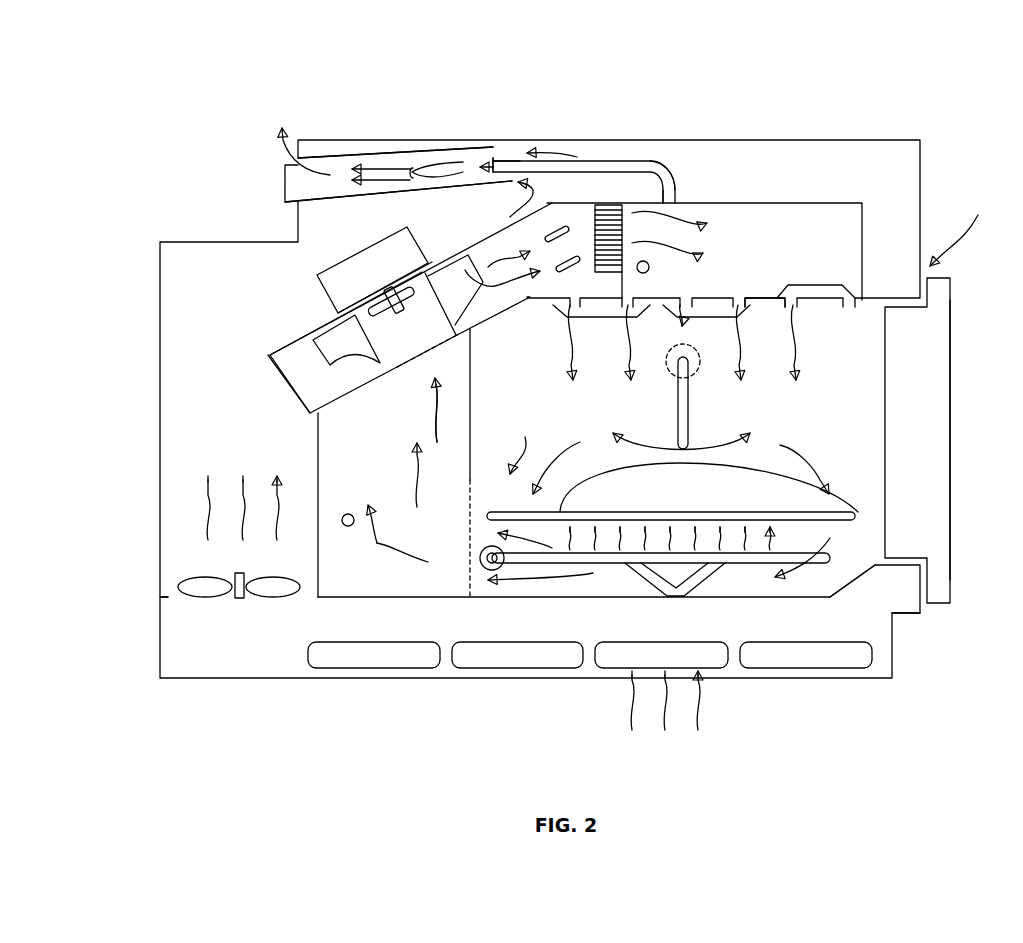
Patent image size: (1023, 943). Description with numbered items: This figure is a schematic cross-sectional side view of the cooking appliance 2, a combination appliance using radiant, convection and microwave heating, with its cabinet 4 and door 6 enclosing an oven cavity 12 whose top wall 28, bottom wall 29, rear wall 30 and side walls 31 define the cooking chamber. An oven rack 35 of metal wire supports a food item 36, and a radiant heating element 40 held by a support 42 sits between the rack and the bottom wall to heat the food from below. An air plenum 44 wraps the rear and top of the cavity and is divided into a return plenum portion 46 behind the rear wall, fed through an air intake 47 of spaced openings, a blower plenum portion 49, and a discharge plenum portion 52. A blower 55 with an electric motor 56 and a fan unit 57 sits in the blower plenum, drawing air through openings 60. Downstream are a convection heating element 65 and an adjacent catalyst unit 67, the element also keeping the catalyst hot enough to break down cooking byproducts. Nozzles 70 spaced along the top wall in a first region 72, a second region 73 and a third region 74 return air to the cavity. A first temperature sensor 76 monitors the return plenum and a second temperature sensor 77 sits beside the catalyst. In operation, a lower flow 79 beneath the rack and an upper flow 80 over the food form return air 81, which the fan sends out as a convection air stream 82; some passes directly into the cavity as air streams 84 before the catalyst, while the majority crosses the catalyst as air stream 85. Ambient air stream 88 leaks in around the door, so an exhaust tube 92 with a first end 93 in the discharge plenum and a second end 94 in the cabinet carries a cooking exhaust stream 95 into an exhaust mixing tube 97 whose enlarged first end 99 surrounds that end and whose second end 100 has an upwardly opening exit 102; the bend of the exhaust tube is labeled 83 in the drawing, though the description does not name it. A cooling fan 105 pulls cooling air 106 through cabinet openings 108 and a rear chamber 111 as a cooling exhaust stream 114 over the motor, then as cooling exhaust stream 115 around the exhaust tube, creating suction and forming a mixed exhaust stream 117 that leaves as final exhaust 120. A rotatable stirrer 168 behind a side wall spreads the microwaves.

The cooking appliance 2 is at (956, 118).
The cabinet 4 is at (922, 197).
The door 6 is at (950, 418).
The oven cavity 12 is at (952, 350).
The top wall 28 is at (773, 320).
The bottom wall 29 is at (778, 593).
The rear wall 30 is at (472, 380).
The side walls 31 is at (814, 431).
The oven rack 35 is at (857, 516).
The food item 36 is at (669, 501).
The radiant heating element 40 is at (832, 560).
The support 42 is at (700, 578).
The air plenum 44 is at (262, 353).
The return plenum portion 46 is at (378, 547).
The air intake 47 is at (467, 537).
The blower plenum portion 49 is at (302, 383).
The discharge plenum portion 52 is at (750, 222).
The blower 55 is at (325, 258).
The electric motor 56 is at (337, 285).
The fan unit 57 is at (463, 297).
The openings 60 is at (397, 368).
The convection heating element 65 is at (560, 225).
The catalyst unit 67 is at (607, 220).
The nozzles 70 is at (748, 308).
The first region 72 is at (815, 280).
The second region 73 is at (700, 320).
The third region 74 is at (593, 318).
The first temperature sensor 76 is at (350, 513).
The second temperature sensor 77 is at (650, 266).
The lower flow 79 is at (527, 580).
The upper flow 80 is at (525, 437).
The return air 81 is at (430, 405).
The convection air stream 82 is at (486, 236).
The duct elbow 83 is at (678, 195).
The air streams 84 is at (793, 346).
The air stream 85 is at (685, 204).
The ambient air stream 88 is at (930, 616).
The exhaust tube 92 is at (652, 167).
The first end 93 is at (695, 190).
The second end 94 is at (498, 150).
The cooking exhaust stream 95 is at (491, 152).
The exhaust mixing tube 97 is at (343, 156).
The first end 99 is at (503, 150).
The second end 100 is at (332, 176).
The upwardly opening exit 102 is at (280, 150).
The cooling fan 105 is at (197, 598).
The cooling air 106 is at (700, 705).
The cabinet openings 108 is at (473, 667).
The rear chamber 111 is at (175, 528).
The cooling exhaust stream 114 is at (203, 508).
The cooling exhaust stream 115 is at (548, 140).
The mixed exhaust stream 117 is at (392, 165).
The final exhaust 120 is at (278, 147).
The stirrer 168 is at (690, 430).